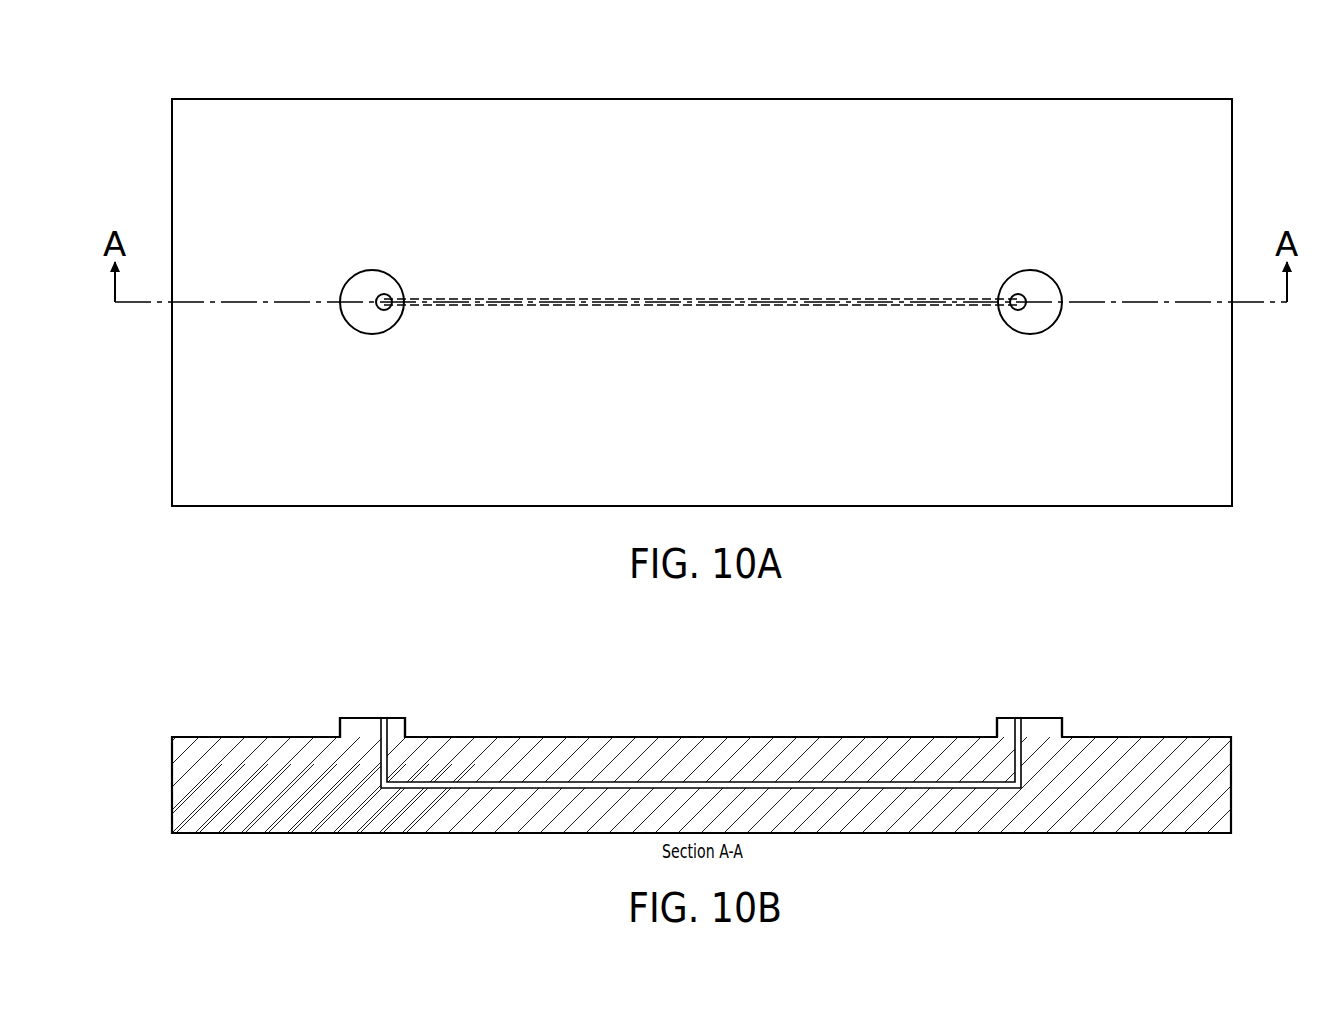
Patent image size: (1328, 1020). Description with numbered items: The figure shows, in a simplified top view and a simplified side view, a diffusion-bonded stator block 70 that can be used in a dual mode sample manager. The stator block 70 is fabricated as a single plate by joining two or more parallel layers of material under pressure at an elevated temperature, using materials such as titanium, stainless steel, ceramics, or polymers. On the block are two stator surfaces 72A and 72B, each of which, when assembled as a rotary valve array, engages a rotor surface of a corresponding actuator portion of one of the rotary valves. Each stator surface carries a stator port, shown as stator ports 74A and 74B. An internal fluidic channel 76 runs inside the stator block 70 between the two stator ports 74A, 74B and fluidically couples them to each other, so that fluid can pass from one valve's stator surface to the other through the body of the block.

In FIG. 10A, the stator block 70 is at (1141, 88).
In FIG. 10B, the stator block 70 is at (1221, 702).
In FIG. 10A, the stator surface 72A is at (372, 270).
In FIG. 10B, the stator surface 72A is at (363, 715).
In FIG. 10A, the stator surface 72B is at (1030, 270).
In FIG. 10B, the stator surface 72B is at (1041, 715).
In FIG. 10A, the stator port 74A is at (389, 310).
In FIG. 10A, the stator port 74B is at (1015, 310).
In FIG. 10A, the internal fluidic channel 76 is at (712, 300).
In FIG. 10B, the internal fluidic channel 76 is at (484, 790).